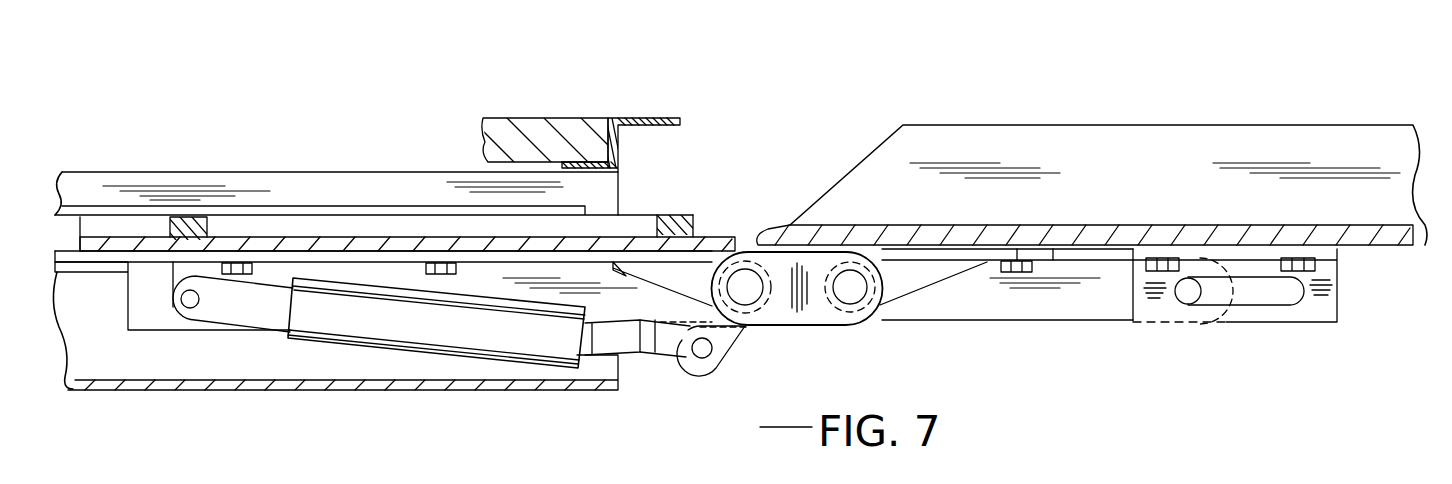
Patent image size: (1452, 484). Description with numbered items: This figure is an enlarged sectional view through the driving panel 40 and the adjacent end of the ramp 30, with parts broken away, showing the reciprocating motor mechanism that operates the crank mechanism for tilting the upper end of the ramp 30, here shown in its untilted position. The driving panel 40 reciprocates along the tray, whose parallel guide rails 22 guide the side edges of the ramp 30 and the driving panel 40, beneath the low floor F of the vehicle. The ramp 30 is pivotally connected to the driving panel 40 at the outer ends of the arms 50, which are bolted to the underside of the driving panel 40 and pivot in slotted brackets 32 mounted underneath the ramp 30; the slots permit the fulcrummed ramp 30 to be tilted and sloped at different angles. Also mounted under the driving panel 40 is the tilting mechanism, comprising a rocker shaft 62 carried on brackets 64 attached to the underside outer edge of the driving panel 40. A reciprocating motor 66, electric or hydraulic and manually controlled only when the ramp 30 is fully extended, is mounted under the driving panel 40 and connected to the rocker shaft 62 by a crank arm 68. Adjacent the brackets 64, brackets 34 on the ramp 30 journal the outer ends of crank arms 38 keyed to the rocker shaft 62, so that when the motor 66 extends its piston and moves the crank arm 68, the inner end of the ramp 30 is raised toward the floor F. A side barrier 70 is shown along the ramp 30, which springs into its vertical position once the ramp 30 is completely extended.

The guide rails 22 is at (90, 272).
The ramp 30 is at (1380, 245).
The slotted brackets 32 is at (1247, 310).
The brackets 34 is at (923, 280).
The crank arms 38 is at (845, 323).
The driving panel 40 is at (278, 236).
The arms 50 is at (1058, 300).
The rocker shaft 62 is at (748, 292).
The brackets 64 is at (683, 283).
The reciprocating motor 66 is at (389, 330).
The crank arm 68 is at (737, 350).
The side barrier 70 is at (1150, 171).
The floor F is at (533, 118).